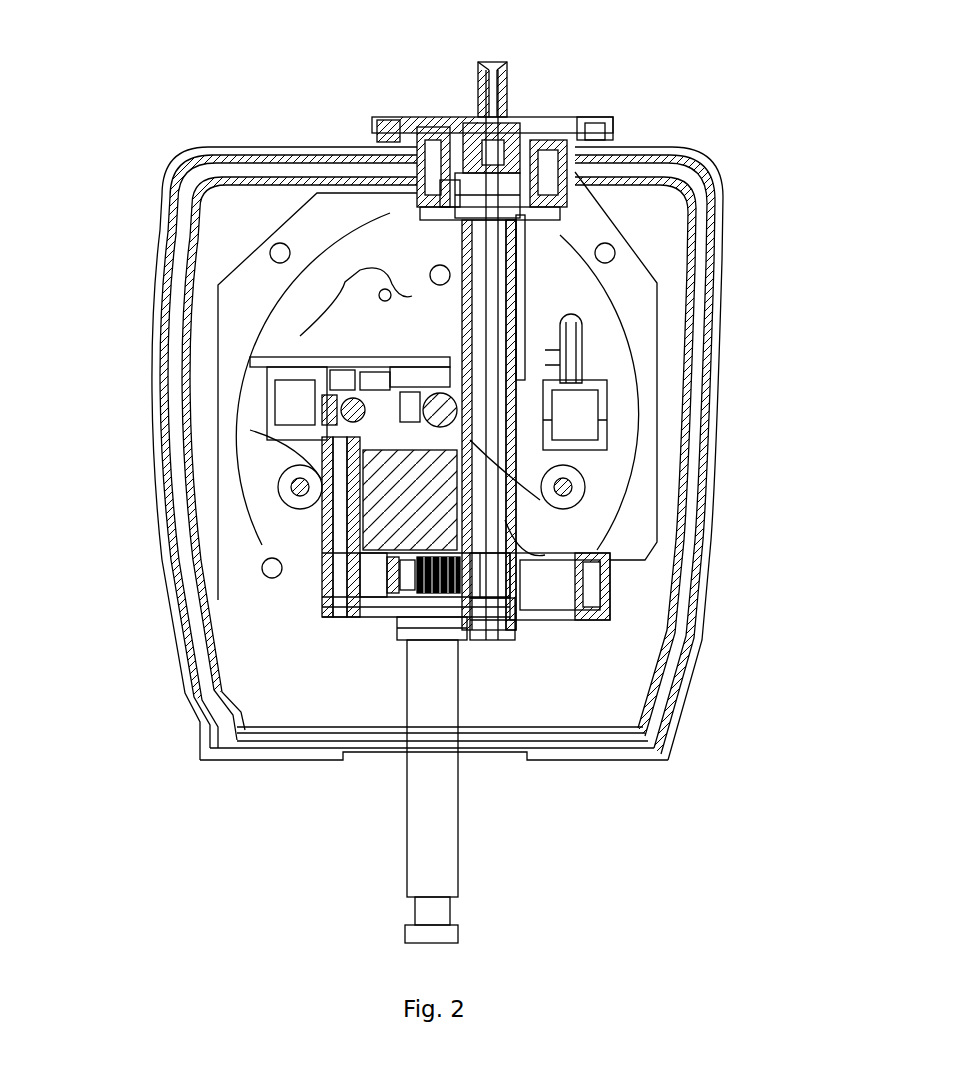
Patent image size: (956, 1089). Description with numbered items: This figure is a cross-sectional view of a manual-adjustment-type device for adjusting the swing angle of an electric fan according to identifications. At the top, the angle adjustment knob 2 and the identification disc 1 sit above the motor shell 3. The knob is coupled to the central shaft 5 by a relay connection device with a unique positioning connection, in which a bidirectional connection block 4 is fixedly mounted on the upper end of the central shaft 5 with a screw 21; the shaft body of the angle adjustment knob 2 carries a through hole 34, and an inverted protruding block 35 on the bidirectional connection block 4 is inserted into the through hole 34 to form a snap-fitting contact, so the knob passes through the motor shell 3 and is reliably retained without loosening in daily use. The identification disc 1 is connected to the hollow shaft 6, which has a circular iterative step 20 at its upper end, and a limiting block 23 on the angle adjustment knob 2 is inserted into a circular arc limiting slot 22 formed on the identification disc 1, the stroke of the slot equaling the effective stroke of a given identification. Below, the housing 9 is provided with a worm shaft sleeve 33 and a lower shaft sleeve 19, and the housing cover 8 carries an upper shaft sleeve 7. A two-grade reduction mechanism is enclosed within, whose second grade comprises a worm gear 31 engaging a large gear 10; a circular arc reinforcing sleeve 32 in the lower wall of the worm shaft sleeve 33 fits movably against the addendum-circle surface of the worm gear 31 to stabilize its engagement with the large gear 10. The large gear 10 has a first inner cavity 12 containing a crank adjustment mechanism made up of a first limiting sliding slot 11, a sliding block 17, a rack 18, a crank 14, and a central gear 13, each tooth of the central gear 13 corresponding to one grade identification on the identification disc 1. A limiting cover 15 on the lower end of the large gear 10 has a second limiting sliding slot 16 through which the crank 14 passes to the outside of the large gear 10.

The identification disc 1 is at (385, 117).
The angle adjustment knob 2 is at (503, 100).
The motor shell 3 is at (555, 162).
The bidirectional connection block 4 is at (470, 188).
The central shaft 5 is at (520, 252).
The hollow shaft 6 is at (520, 290).
The upper shaft sleeve 7 is at (525, 337).
The housing cover 8 is at (545, 372).
The housing 9 is at (575, 438).
The large gear 10 is at (600, 546).
The first limiting sliding slot 11 is at (600, 580).
The first inner cavity 12 is at (580, 577).
The central gear 13 is at (523, 580).
The crank 14 is at (507, 627).
The limiting cover 15 is at (450, 620).
The second limiting sliding slot 16 is at (397, 633).
The sliding block 17 is at (375, 560).
The rack 18 is at (430, 555).
The lower shaft sleeve 19 is at (453, 448).
The circular iterative step 20 is at (455, 200).
The screw 21 is at (455, 178).
The limiting slot 22 is at (412, 140).
The limiting block 23 is at (385, 125).
The worm gear 31 is at (337, 588).
The circular arc reinforcing sleeve 32 is at (327, 577).
The worm shaft sleeve 33 is at (327, 477).
The through hole 34 is at (590, 117).
The inverted protruding block 35 is at (590, 152).